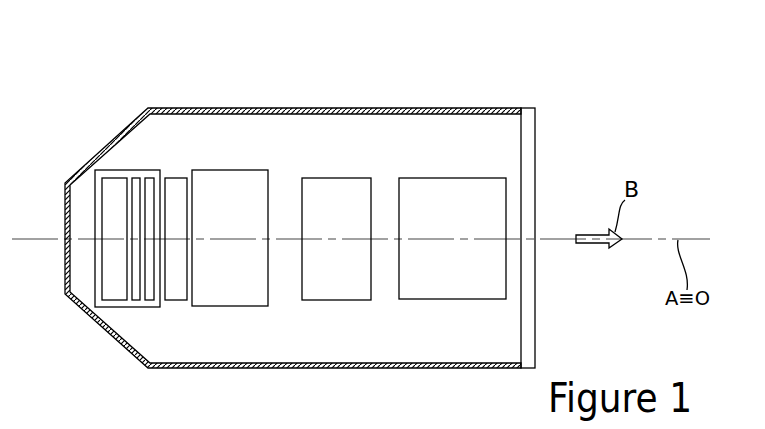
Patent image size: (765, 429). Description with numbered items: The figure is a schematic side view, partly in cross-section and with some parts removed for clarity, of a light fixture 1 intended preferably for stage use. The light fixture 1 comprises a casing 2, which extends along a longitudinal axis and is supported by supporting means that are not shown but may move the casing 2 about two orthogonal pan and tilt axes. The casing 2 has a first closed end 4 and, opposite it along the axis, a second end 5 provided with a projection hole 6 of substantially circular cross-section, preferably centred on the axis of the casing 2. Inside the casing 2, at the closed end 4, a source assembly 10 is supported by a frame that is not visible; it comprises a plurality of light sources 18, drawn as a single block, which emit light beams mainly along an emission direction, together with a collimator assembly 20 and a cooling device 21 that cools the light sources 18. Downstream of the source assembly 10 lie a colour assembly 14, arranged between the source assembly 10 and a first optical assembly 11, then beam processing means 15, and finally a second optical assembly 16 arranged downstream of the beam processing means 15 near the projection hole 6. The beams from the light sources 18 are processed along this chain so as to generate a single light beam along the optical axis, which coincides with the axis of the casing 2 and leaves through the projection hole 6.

The light fixture 1 is at (599, 91).
The casing 2 is at (335, 109).
The first closed end 4 is at (62, 148).
The second end 5 is at (509, 79).
The projection hole 6 is at (538, 189).
The source assembly 10 is at (121, 168).
The first optical assembly 11 is at (213, 310).
The colour assembly 14 is at (173, 178).
The beam processing means 15 is at (347, 295).
The second optical assembly 16 is at (452, 289).
The light sources 18 is at (135, 178).
The collimator assembly 20 is at (152, 298).
The cooling device 21 is at (98, 287).